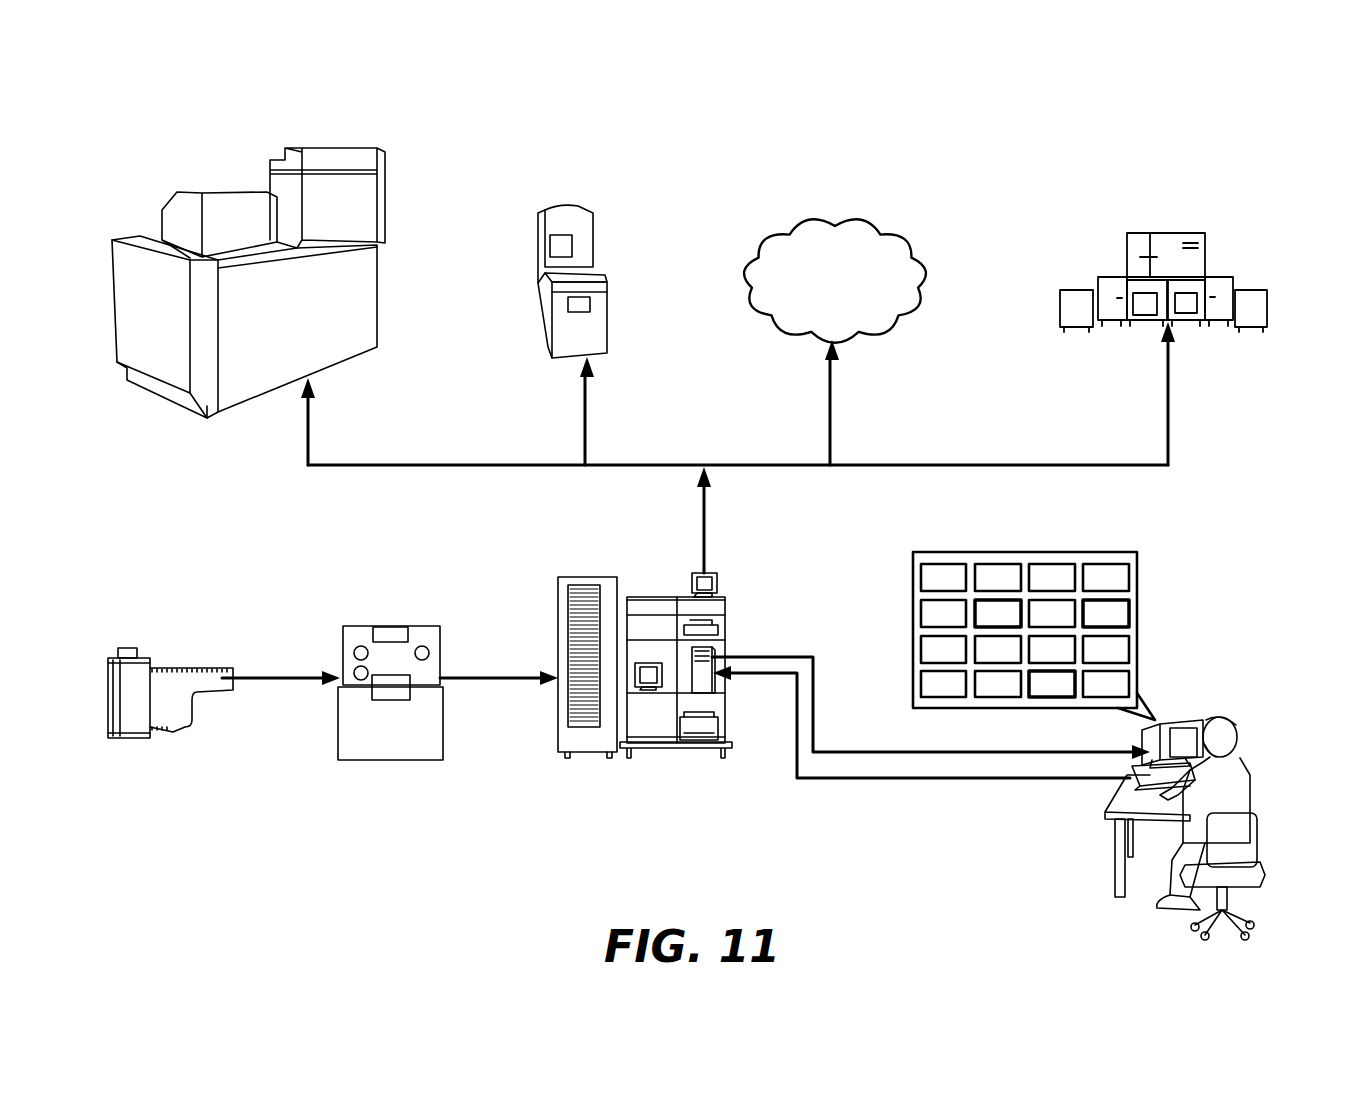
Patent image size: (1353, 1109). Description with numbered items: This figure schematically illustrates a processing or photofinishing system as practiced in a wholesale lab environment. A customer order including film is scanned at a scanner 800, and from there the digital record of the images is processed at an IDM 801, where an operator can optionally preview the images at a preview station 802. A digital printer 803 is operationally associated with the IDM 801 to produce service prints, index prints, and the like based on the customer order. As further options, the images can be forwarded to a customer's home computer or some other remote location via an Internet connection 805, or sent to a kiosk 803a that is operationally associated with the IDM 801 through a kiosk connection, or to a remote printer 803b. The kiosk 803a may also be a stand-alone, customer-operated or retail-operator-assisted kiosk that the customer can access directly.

The scanner 800 is at (398, 625).
The IDM 801 is at (660, 747).
The preview station 802 is at (1187, 723).
The digital printer 803 is at (1150, 233).
The kiosk 803a is at (553, 207).
The remote printer 803b is at (310, 148).
The Internet connection 805 is at (823, 223).